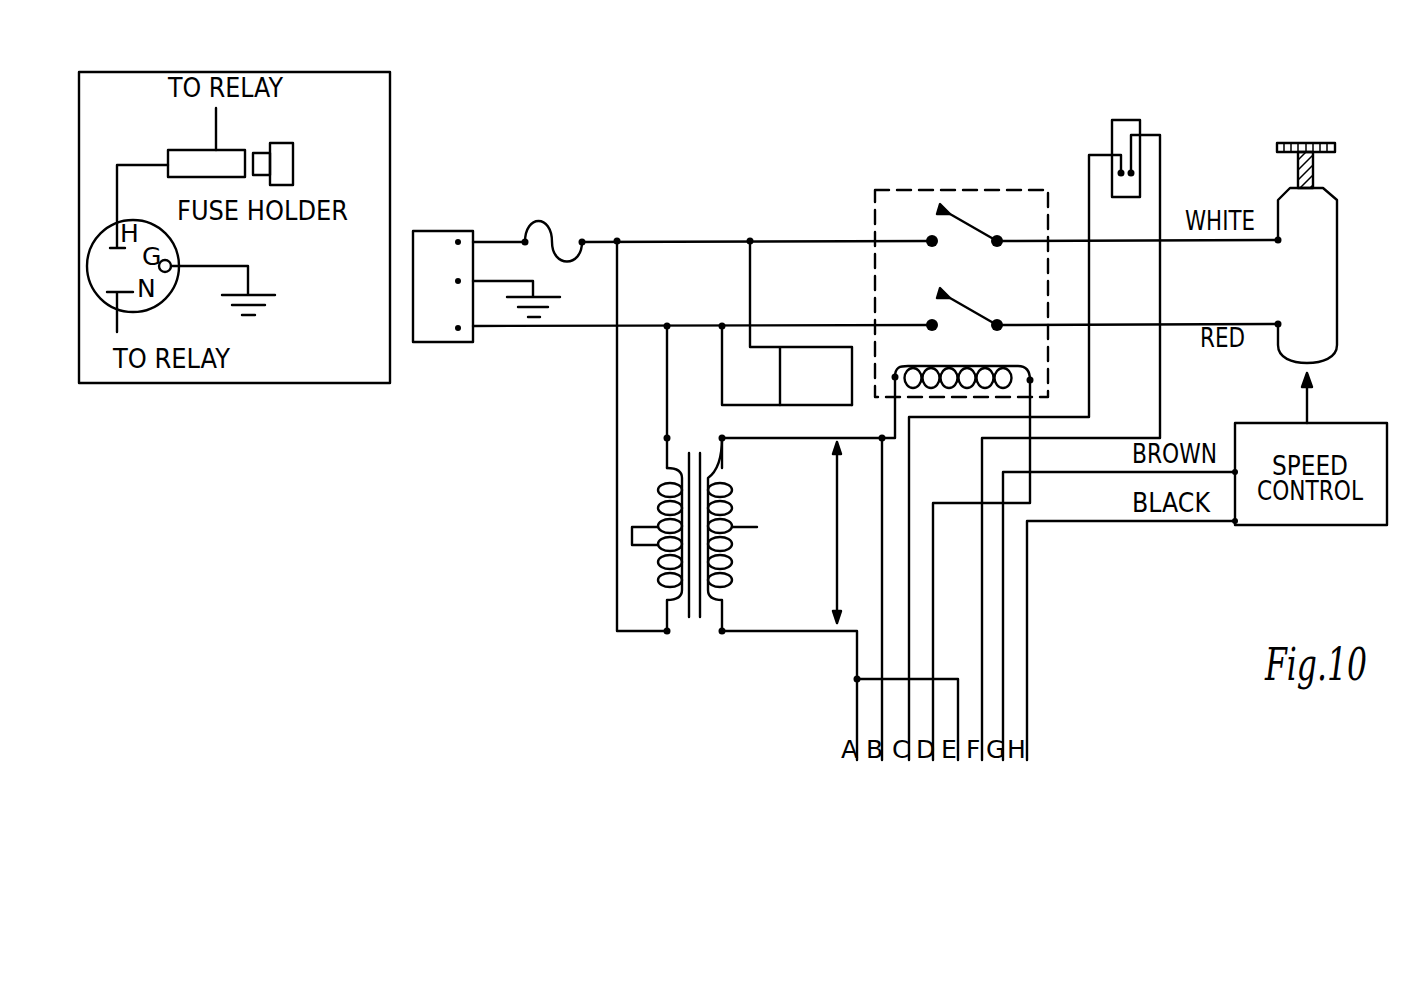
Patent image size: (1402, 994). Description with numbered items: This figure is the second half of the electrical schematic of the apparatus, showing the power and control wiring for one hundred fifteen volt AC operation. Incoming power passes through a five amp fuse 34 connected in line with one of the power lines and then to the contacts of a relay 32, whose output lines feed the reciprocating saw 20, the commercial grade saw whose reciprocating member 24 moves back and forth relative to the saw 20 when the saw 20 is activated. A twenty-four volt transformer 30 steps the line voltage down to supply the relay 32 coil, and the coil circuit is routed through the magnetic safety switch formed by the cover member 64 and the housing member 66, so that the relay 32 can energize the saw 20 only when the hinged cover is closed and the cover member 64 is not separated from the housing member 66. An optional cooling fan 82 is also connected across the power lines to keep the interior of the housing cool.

The reciprocating saw 20 is at (1337, 257).
The reciprocating member 24 is at (1313, 170).
The transformer 30 is at (697, 636).
The relay 32 is at (927, 190).
The fuse 34 is at (543, 220).
The cover member 64 is at (1099, 134).
The housing member 66 is at (1127, 120).
The cooling fan 82 is at (815, 360).